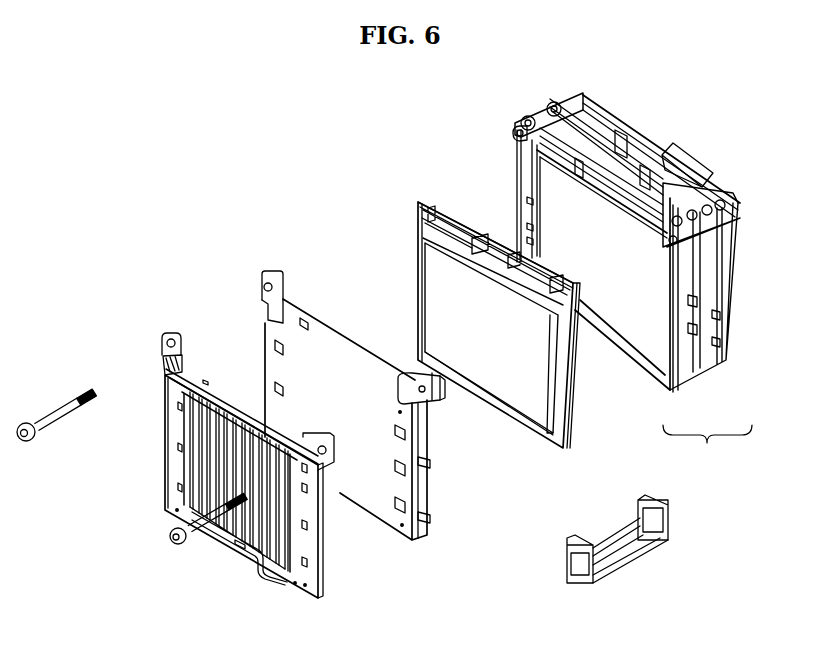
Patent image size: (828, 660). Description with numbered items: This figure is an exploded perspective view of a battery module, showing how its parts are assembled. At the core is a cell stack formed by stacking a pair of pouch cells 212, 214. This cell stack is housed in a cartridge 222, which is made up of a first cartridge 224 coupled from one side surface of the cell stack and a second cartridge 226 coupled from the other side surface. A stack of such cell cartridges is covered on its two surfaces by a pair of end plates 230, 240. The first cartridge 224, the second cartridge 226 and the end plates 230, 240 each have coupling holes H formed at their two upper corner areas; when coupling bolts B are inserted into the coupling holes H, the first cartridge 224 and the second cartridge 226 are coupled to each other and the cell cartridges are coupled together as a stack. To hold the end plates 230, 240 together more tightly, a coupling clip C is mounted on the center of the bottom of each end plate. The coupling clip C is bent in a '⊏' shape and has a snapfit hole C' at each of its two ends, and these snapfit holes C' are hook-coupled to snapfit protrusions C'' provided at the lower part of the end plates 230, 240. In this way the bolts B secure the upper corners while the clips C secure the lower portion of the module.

The pouch cell 212 is at (417, 223).
The pouch cell 214 is at (432, 202).
The cartridge 222 is at (707, 448).
The first cartridge 224 is at (297, 303).
The second cartridge 226 is at (516, 183).
The end plate 230 is at (311, 590).
The end plate 240 is at (735, 330).
The coupling bolt B is at (40, 423).
The coupling clip C is at (627, 544).
The snapfit hole C' is at (610, 519).
The snapfit protrusion C'' is at (230, 571).
The coupling hole H is at (428, 405).